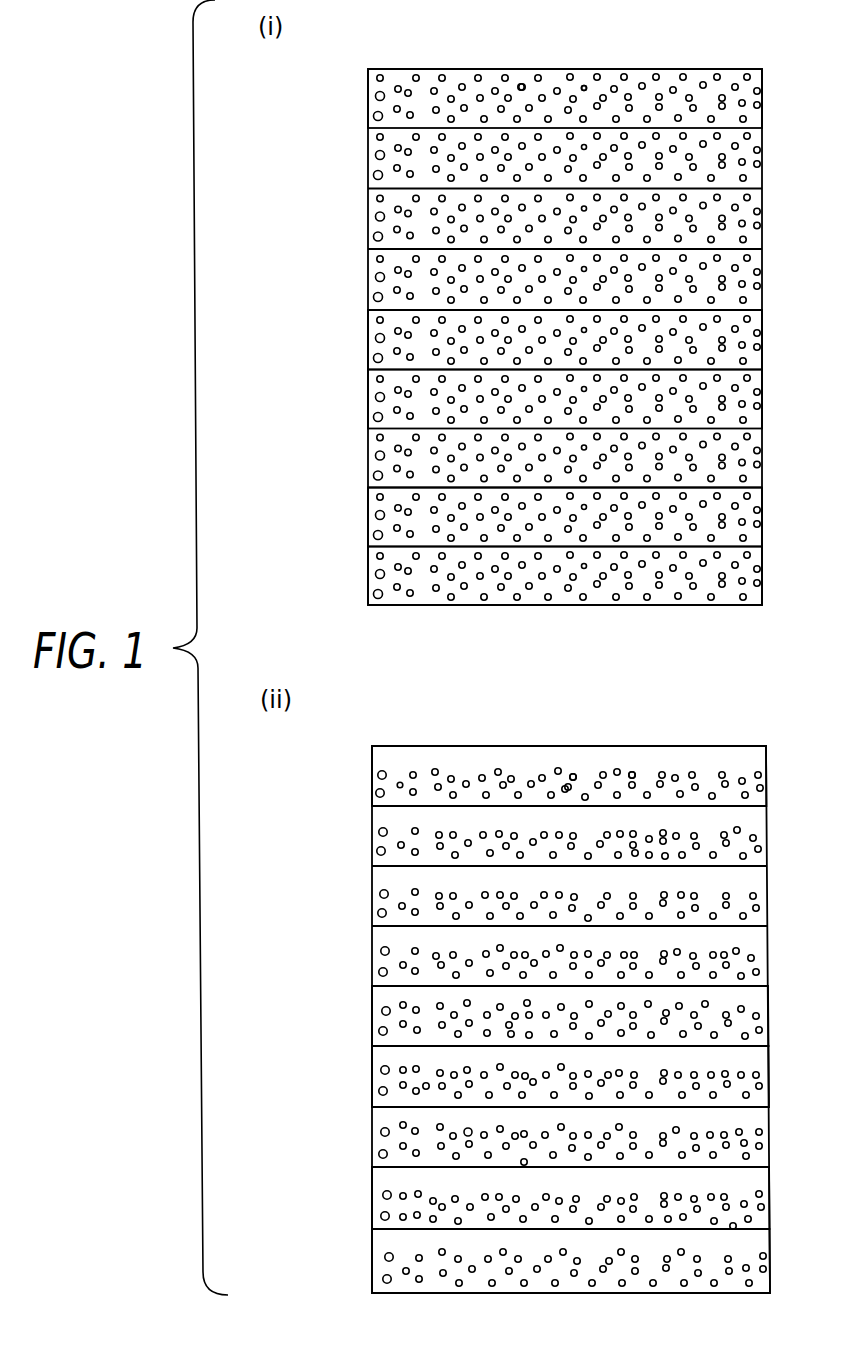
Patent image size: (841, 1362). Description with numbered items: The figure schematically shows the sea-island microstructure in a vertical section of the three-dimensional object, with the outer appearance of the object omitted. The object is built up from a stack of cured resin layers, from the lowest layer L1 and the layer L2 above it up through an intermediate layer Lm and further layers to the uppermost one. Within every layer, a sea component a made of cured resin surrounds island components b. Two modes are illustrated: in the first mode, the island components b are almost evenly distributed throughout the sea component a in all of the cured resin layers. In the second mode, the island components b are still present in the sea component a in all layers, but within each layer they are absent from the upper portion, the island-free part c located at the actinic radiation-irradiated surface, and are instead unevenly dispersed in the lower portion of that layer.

The cured resin layer Lm is at (368, 400).
The cured resin layer L2 is at (368, 520).
The cured resin layer L1 is at (368, 578).
The sea component a is at (522, 74).
The island component b is at (584, 84).
The island-free part c is at (772, 747).